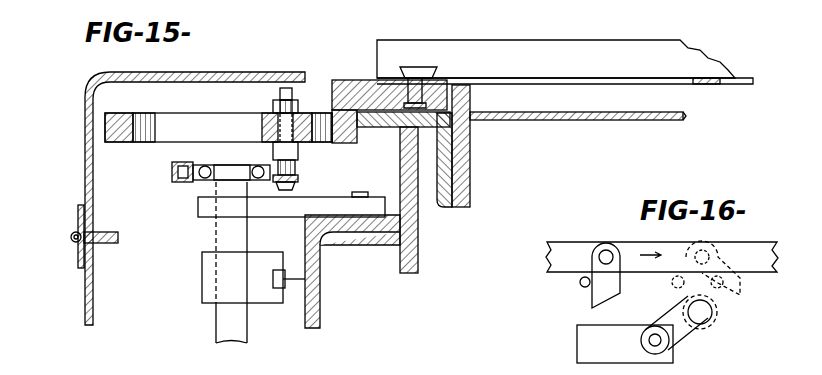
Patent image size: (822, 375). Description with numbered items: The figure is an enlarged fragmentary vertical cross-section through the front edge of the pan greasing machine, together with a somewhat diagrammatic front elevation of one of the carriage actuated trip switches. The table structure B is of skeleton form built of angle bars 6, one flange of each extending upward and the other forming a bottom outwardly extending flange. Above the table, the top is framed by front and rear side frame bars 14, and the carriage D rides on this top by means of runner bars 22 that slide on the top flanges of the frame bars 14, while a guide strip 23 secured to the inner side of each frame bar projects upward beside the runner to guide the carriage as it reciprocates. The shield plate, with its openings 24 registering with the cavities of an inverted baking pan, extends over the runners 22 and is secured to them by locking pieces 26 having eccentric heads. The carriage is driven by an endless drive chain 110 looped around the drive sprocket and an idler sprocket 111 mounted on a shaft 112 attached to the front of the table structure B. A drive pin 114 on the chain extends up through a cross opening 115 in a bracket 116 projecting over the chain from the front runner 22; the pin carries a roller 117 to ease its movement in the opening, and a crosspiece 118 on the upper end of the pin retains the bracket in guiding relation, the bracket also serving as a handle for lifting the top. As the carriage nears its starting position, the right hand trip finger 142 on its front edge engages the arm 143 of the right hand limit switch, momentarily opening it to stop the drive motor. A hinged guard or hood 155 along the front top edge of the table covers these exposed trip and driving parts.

In FIG. 15, the table bar 6 is at (410, 218).
In FIG. 15, the side frame bar 14 is at (450, 162).
In FIG. 15, the runner bar 22 is at (372, 82).
In FIG. 15, the guide strip 23 is at (470, 98).
In FIG. 15, the shield plate opening 24 is at (612, 58).
In FIG. 15, the locking piece 26 is at (425, 67).
In FIG. 15, the endless drive chain 110 is at (174, 170).
In FIG. 15, the idler sprocket 111 is at (203, 182).
In FIG. 15, the shaft 112 is at (217, 320).
In FIG. 15, the drive pin 114 is at (292, 156).
In FIG. 15, the cross opening 115 is at (207, 105).
In FIG. 15, the bracket 116 is at (108, 143).
In FIG. 15, the roller 117 is at (262, 133).
In FIG. 15, the crosspiece 118 is at (280, 100).
In FIG. 16, the right hand trip finger 142 is at (592, 296).
In FIG. 16, the limit switch arm 143 is at (682, 330).
In FIG. 15, the guard or hood 155 is at (85, 180).
In FIG. 15, the table structure B is at (76, 295).
In FIG. 16, the carriage D is at (585, 239).